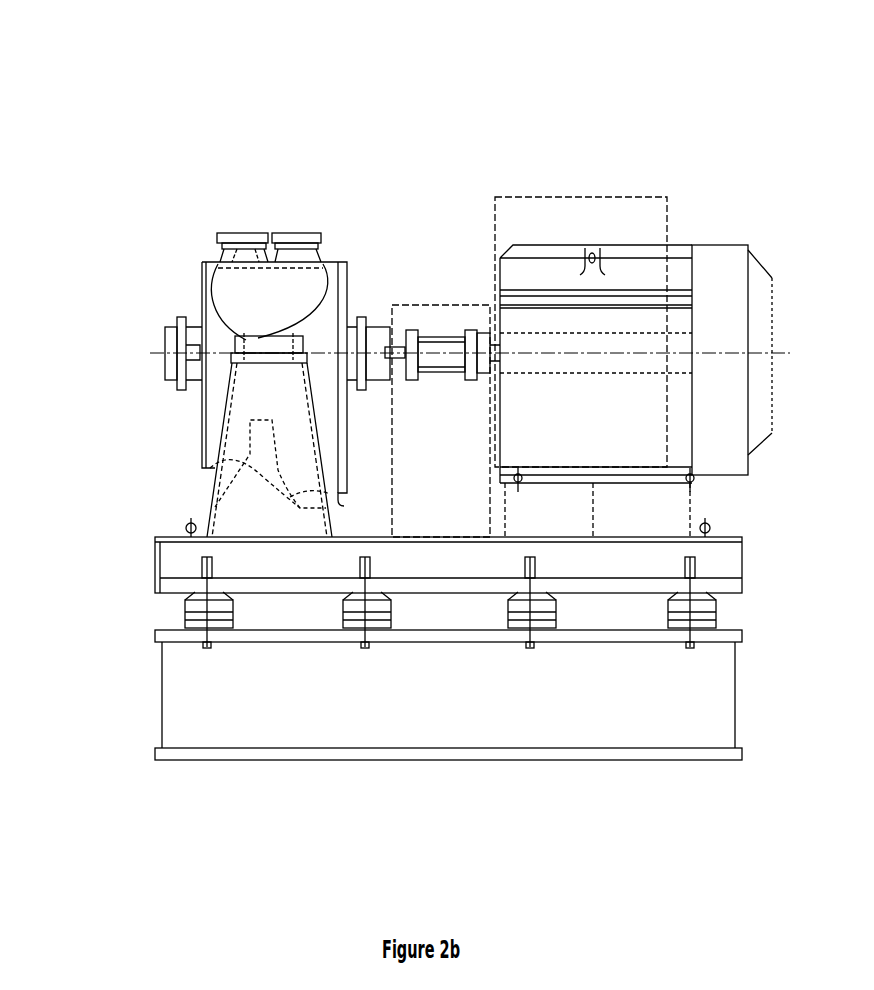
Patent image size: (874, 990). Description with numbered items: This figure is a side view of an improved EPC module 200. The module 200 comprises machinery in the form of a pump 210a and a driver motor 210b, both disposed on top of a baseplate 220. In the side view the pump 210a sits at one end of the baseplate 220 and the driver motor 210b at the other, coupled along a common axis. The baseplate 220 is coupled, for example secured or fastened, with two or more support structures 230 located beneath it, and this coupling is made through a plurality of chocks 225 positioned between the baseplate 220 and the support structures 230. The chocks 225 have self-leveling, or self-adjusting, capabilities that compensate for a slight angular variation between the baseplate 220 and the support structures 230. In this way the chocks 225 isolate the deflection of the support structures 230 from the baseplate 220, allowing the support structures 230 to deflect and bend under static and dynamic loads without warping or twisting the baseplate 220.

The EPC module 200 is at (146, 92).
The pump 210a is at (335, 262).
The driver motor 210b is at (704, 245).
The baseplate 220 is at (165, 537).
The chocks 225 is at (183, 605).
The support structures 230 is at (162, 697).